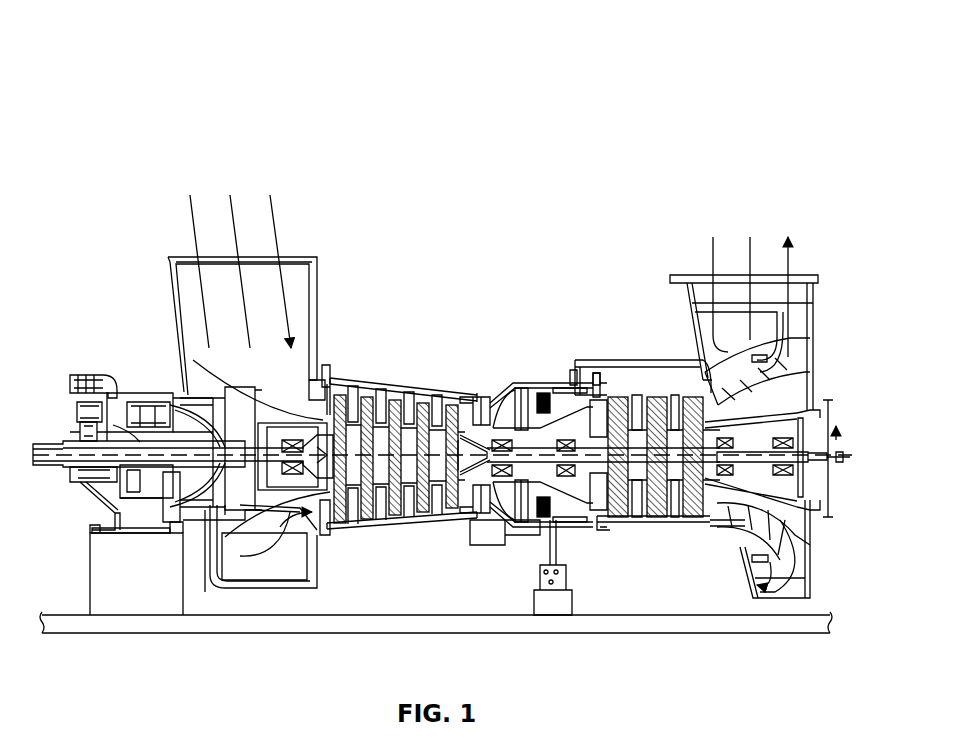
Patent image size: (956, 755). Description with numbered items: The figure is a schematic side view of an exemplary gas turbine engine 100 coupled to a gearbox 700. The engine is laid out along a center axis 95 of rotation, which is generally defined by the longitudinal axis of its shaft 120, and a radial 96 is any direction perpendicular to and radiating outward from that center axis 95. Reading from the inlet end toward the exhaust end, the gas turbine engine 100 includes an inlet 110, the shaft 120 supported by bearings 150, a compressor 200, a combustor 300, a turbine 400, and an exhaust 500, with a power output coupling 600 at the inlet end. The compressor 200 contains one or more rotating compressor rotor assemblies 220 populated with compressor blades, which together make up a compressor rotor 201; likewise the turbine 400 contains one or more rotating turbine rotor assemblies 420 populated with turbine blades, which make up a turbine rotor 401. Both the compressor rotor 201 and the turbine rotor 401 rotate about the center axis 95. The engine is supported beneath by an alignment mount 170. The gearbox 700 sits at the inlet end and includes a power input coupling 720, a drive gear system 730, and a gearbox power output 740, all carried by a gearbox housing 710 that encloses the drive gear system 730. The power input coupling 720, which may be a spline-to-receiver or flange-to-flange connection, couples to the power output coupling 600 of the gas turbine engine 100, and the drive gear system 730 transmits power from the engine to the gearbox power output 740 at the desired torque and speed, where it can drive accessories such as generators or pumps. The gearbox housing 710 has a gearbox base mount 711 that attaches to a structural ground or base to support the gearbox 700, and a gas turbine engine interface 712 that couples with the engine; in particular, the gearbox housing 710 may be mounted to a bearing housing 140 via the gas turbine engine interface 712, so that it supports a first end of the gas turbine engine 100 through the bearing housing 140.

The gas turbine engine 100 is at (126, 40).
The inlet 110 is at (316, 172).
The shaft 120 is at (295, 525).
The bearing housing 140 is at (218, 510).
The bearings 150 is at (322, 520).
The alignment mount 170 is at (563, 570).
The compressor 200 is at (475, 172).
The compressor rotor 201 is at (460, 522).
The compressor rotor assemblies 220 is at (400, 518).
The combustor 300 is at (599, 172).
The turbine 400 is at (720, 172).
The turbine rotor 401 is at (654, 507).
The turbine rotor assemblies 420 is at (622, 522).
The exhaust 500 is at (820, 172).
The power output coupling 600 is at (200, 520).
The gearbox 700 is at (106, 330).
The gearbox housing 710 is at (90, 480).
The gearbox base mount 711 is at (92, 537).
The gas turbine engine interface 712 is at (240, 505).
The power input coupling 720 is at (212, 440).
The drive gear system 730 is at (118, 486).
The gearbox power output 740 is at (36, 442).
The center axis 95 is at (838, 465).
The radial 96 is at (838, 432).